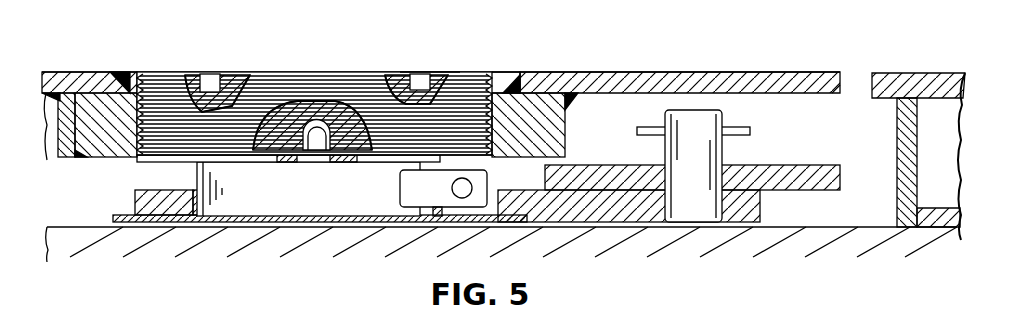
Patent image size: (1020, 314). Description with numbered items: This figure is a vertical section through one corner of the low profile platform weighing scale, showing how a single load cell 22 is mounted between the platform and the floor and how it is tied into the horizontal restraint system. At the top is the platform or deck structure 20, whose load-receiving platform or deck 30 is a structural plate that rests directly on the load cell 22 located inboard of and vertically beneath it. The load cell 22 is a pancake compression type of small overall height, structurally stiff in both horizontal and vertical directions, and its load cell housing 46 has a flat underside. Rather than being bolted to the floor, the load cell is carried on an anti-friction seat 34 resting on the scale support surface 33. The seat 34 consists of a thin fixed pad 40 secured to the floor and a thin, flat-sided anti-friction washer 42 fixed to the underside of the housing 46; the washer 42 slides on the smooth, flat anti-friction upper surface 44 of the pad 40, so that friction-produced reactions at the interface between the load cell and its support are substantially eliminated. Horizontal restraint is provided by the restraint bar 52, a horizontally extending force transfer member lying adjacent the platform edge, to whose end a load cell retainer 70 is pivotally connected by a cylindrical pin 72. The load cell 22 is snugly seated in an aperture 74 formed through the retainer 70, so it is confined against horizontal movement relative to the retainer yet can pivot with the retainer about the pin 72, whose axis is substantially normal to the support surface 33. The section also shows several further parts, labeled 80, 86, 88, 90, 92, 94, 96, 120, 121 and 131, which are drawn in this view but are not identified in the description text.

The platform or deck structure 20 is at (578, 69).
The load cell 22 is at (232, 162).
The load-receiving platform or deck 30 is at (88, 72).
The scale support surface 33 is at (88, 228).
The anti-friction seat 34 is at (130, 206).
The fixed pad 40 is at (183, 190).
The anti-friction washer 42 is at (420, 212).
The anti-friction upper surface 44 is at (307, 213).
The load cell housing 46 is at (333, 203).
The restraint bar 52 is at (815, 165).
The load cell retainer 70 is at (532, 190).
The cylindrical pin 72 is at (690, 120).
The aperture 74 is at (350, 186).
The weld 80 is at (433, 69).
The nut 86 is at (441, 112).
The body 88 is at (128, 88).
The threads 90 is at (153, 100).
The weld 92 is at (508, 73).
The opening 94 is at (318, 152).
The dome 96 is at (316, 150).
The block 120 is at (497, 72).
The pocket 121 is at (206, 76).
The bracket 131 is at (905, 72).